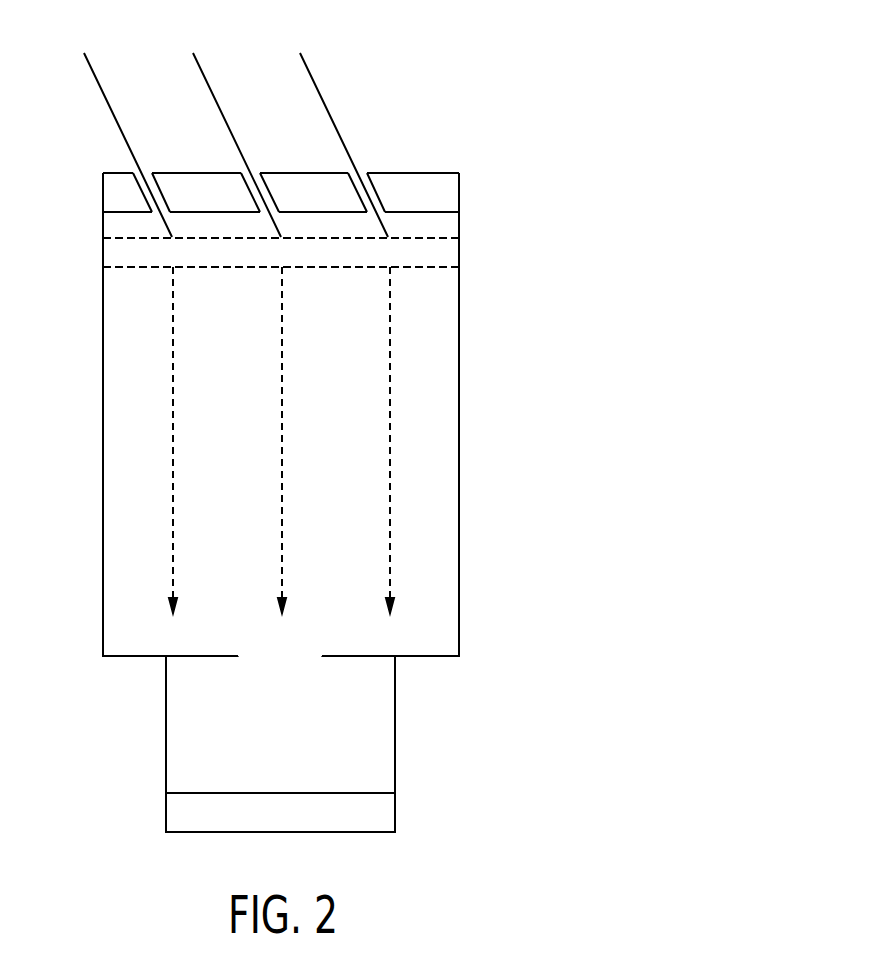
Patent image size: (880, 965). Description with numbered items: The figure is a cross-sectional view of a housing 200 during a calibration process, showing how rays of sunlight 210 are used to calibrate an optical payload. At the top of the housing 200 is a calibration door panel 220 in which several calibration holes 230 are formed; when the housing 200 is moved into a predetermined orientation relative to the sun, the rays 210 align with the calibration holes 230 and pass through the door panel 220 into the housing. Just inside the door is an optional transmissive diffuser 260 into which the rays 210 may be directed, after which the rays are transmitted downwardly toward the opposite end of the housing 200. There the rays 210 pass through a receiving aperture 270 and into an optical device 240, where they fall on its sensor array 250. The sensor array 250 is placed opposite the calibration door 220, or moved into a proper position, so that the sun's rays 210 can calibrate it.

The housing 200 is at (450, 459).
The rays of sunlight 210 is at (107, 95).
The calibration door panel 220 is at (453, 195).
The calibration holes 230 is at (147, 173).
The optical device 240 is at (385, 736).
The sensor array 250 is at (385, 816).
The transmissive diffuser 260 is at (455, 251).
The receiving aperture 270 is at (295, 657).